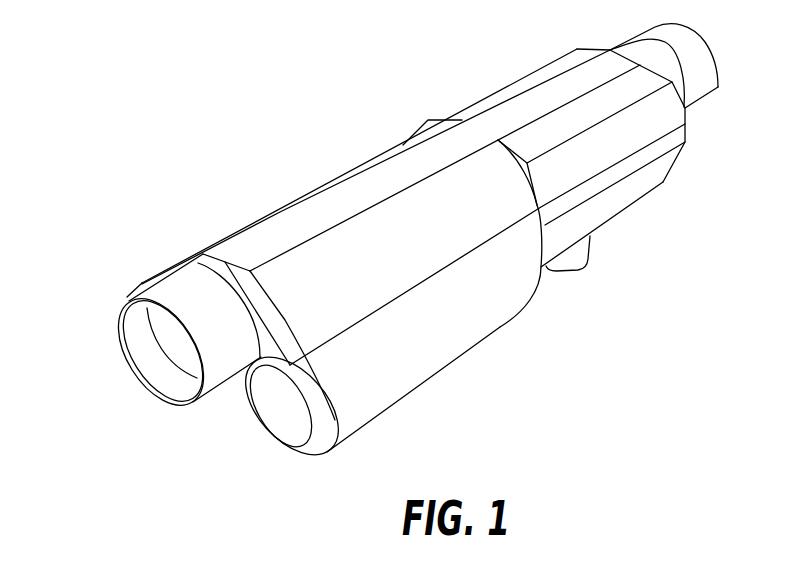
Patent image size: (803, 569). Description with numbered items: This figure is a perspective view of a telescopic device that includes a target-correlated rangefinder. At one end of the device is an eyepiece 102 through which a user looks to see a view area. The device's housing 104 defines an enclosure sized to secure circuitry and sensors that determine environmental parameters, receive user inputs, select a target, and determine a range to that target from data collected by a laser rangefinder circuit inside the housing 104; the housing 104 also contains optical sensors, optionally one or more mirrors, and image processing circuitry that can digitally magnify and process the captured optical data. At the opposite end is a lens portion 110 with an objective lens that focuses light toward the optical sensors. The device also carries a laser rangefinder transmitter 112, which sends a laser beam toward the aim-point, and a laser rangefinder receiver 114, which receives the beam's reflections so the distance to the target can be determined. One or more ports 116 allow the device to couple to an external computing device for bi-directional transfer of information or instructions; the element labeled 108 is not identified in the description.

The eyepiece 102 is at (644, 32).
The housing 104 is at (487, 95).
The first outlet bore 108 is at (175, 353).
The lens portion 110 is at (141, 283).
The laser rangefinder transmitter 112 is at (100, 366).
The laser rangefinder receiver 114 is at (262, 418).
The ports 116 is at (578, 272).